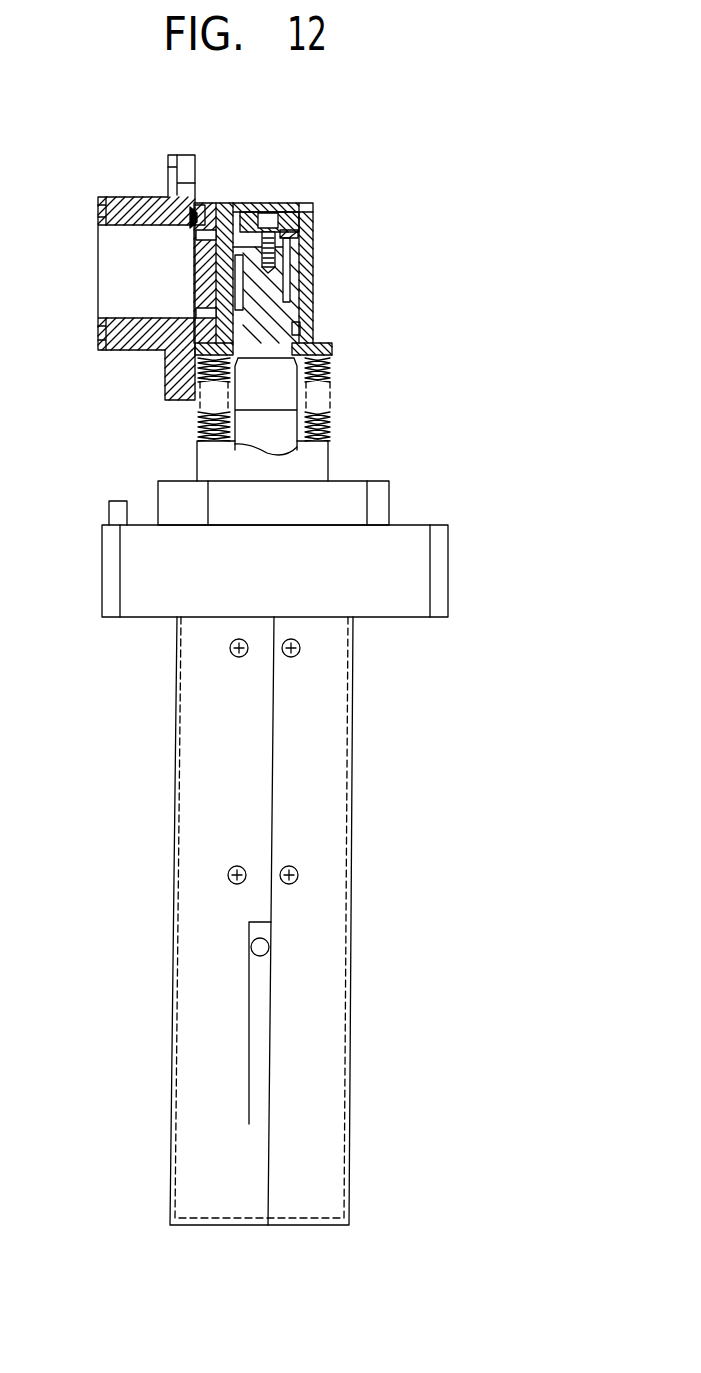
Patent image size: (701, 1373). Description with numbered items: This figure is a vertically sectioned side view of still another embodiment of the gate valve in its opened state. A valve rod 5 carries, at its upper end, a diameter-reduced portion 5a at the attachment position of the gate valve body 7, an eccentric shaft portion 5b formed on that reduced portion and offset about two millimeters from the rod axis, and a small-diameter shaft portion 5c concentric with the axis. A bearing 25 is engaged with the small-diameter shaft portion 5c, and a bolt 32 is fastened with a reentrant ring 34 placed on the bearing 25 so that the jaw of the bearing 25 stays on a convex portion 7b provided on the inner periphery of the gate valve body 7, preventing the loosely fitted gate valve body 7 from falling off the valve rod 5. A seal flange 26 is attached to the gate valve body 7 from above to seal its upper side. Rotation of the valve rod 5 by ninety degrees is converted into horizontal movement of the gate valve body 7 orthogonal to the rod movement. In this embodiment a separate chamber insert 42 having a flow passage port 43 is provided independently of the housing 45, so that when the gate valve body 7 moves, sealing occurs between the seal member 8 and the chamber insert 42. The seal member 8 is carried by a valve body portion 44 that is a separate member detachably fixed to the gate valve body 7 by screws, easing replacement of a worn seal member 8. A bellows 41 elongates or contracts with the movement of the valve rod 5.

The valve rod 5 is at (290, 425).
The diameter-reduced portion 5a is at (300, 316).
The eccentric shaft portion 5b is at (294, 282).
The small-diameter shaft portion 5c is at (228, 252).
The gate valve body 7 is at (315, 302).
The convex portion 7b is at (315, 231).
The seal member 8 is at (190, 218).
The bearing 25 is at (300, 247).
The seal flange 26 is at (292, 205).
The bolt 32 is at (271, 205).
The reentrant ring 34 is at (313, 202).
The bellows 41 is at (330, 372).
The chamber insert 42 is at (118, 347).
The flow passage port 43 is at (160, 306).
The valve body portion 44 is at (206, 215).
The housing 45 is at (177, 716).